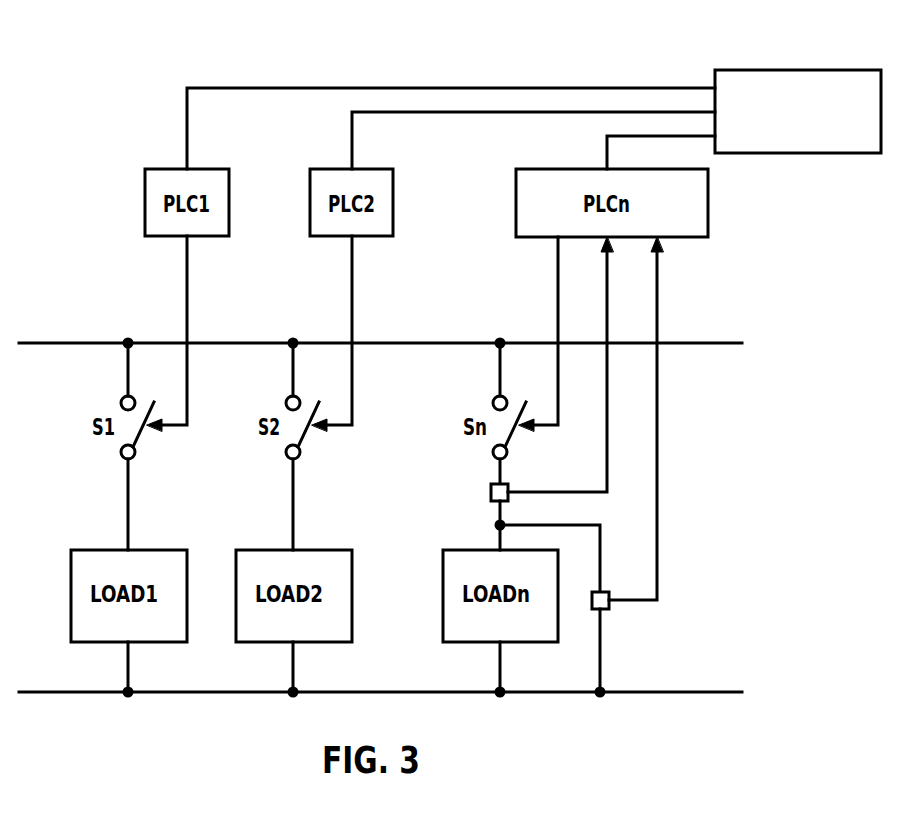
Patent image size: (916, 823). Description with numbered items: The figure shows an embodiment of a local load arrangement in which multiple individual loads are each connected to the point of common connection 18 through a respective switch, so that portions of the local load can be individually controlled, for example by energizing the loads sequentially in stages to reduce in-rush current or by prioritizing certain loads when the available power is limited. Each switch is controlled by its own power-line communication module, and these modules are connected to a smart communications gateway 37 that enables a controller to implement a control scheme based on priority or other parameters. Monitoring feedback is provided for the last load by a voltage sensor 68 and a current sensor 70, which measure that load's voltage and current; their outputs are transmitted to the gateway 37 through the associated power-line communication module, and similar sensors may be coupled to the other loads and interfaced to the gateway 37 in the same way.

The point of common connection 18 is at (293, 343).
The smart communications gateway 37 is at (807, 70).
The voltage sensor 68 is at (608, 606).
The current sensor 70 is at (491, 492).